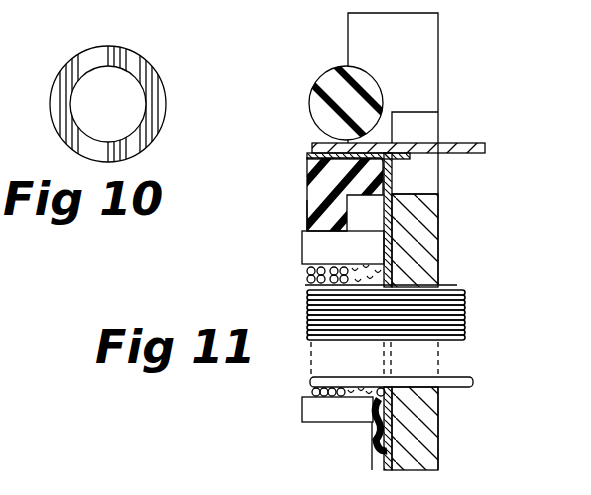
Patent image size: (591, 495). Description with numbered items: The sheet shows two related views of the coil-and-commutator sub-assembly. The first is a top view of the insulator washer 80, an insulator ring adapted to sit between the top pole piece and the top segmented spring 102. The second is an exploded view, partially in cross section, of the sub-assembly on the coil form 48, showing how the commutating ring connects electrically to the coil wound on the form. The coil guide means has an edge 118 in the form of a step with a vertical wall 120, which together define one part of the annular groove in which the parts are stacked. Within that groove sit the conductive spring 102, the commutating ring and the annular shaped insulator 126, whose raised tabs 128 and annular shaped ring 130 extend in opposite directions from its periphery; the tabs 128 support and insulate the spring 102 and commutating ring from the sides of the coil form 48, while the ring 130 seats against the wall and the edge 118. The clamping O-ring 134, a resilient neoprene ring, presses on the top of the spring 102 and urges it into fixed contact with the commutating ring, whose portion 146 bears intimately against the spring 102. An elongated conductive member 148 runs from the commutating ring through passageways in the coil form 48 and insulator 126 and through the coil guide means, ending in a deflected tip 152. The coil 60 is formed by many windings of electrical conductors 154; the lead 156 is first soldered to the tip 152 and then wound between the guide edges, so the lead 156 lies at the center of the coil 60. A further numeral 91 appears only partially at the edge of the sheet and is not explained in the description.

In FIG. 10, the insulator washer 80 is at (143, 68).
In FIG. 11, the coil form 48 is at (428, 67).
In FIG. 11, the raised tabs 128 is at (430, 130).
In FIG. 11, the clamping O-ring 134 is at (308, 105).
In FIG. 11, the conductive segmented spring 102 is at (467, 153).
In FIG. 11, the portion of commutating ring 146 is at (305, 157).
In FIG. 11, the elongated conductive member 148 is at (392, 175).
In FIG. 11, the annular shaped insulator 126 is at (307, 190).
In FIG. 11, the annular shaped ring 130 is at (330, 220).
In FIG. 11, the vertical wall 120 is at (345, 218).
In FIG. 11, the edge 118 is at (302, 253).
In FIG. 11, the coil 60 is at (305, 283).
In FIG. 11, the electrical conductors 154 is at (310, 392).
In FIG. 11, the deflected tip 152 is at (392, 447).
In FIG. 11, the lead of the electrical conductor 156 is at (378, 408).
In FIG. 11, the member 91 is at (226, 485).